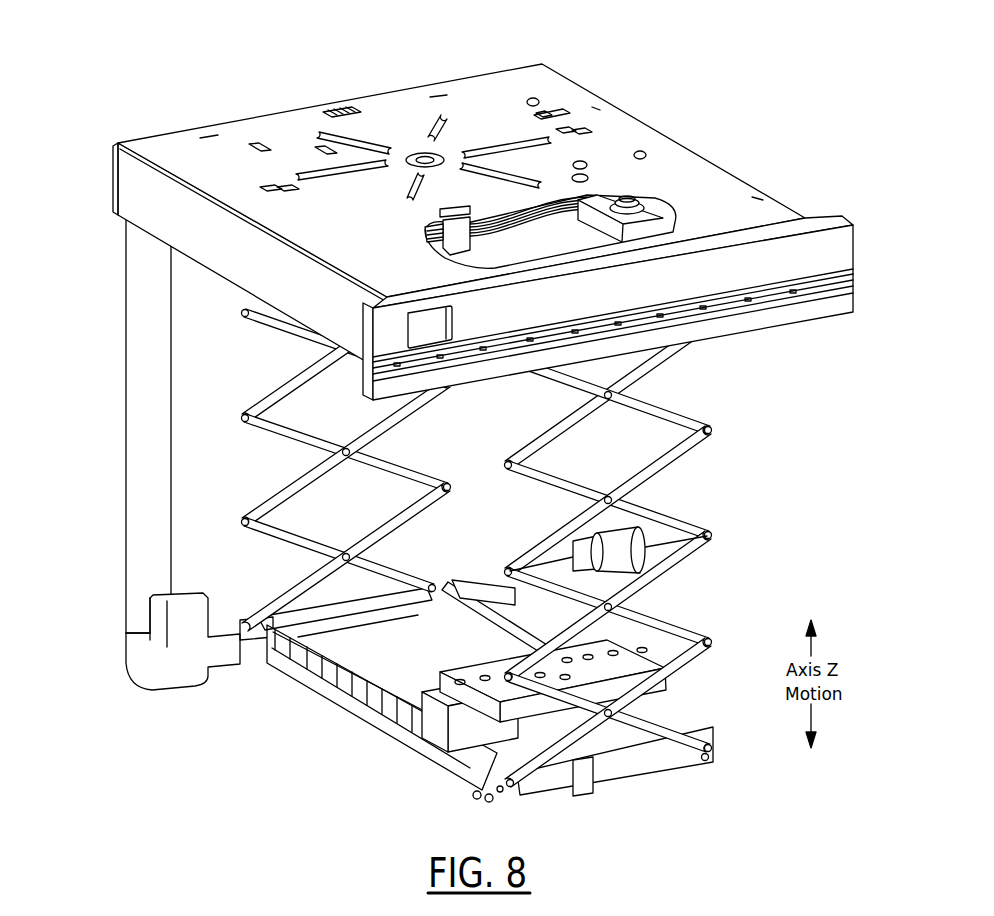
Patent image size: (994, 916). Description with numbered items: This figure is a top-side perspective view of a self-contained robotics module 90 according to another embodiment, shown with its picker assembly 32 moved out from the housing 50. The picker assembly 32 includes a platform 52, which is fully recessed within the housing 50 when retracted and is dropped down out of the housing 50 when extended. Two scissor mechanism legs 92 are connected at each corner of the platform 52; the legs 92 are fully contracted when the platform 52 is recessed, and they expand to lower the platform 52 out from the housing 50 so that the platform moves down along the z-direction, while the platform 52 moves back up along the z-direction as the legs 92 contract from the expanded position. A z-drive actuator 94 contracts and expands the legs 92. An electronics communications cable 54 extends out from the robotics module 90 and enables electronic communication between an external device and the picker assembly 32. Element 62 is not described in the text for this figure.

The picker assembly 32 is at (516, 530).
The housing 50 is at (458, 100).
The platform 52 is at (410, 737).
The communications cable 54 is at (148, 543).
The drive mount plate 62 is at (657, 703).
The self-contained robotics module 90 is at (483, 206).
The scissor mechanism legs 92 is at (390, 467).
The z-drive actuator 94 is at (637, 567).